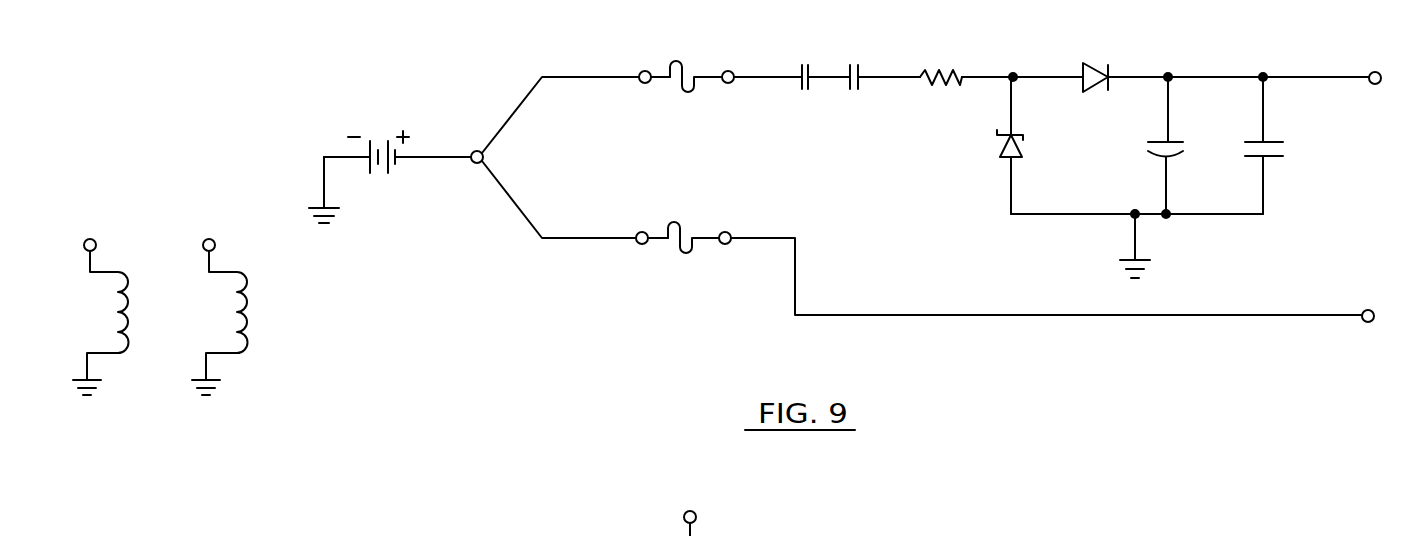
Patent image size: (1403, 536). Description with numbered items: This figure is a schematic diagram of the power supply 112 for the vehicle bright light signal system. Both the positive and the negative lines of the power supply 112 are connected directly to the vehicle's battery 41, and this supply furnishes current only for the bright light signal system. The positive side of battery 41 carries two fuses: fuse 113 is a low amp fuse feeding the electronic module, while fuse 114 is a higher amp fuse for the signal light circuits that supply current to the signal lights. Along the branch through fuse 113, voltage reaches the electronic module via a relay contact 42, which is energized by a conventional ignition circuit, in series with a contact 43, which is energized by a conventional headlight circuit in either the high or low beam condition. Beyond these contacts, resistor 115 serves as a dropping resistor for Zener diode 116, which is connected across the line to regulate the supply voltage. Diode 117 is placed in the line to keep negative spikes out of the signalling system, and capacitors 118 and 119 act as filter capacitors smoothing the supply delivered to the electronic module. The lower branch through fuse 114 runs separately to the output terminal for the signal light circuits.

The battery 41 is at (380, 180).
The relay contact 42 is at (808, 60).
The contact 43 is at (858, 63).
The power supply 112 is at (458, 405).
The fuse 113 is at (687, 63).
The fuse 114 is at (688, 256).
The resistor 115 is at (938, 70).
The Zener diode 116 is at (1002, 145).
The diode 117 is at (1112, 73).
The capacitor 118 is at (1177, 142).
The capacitor 119 is at (1280, 143).